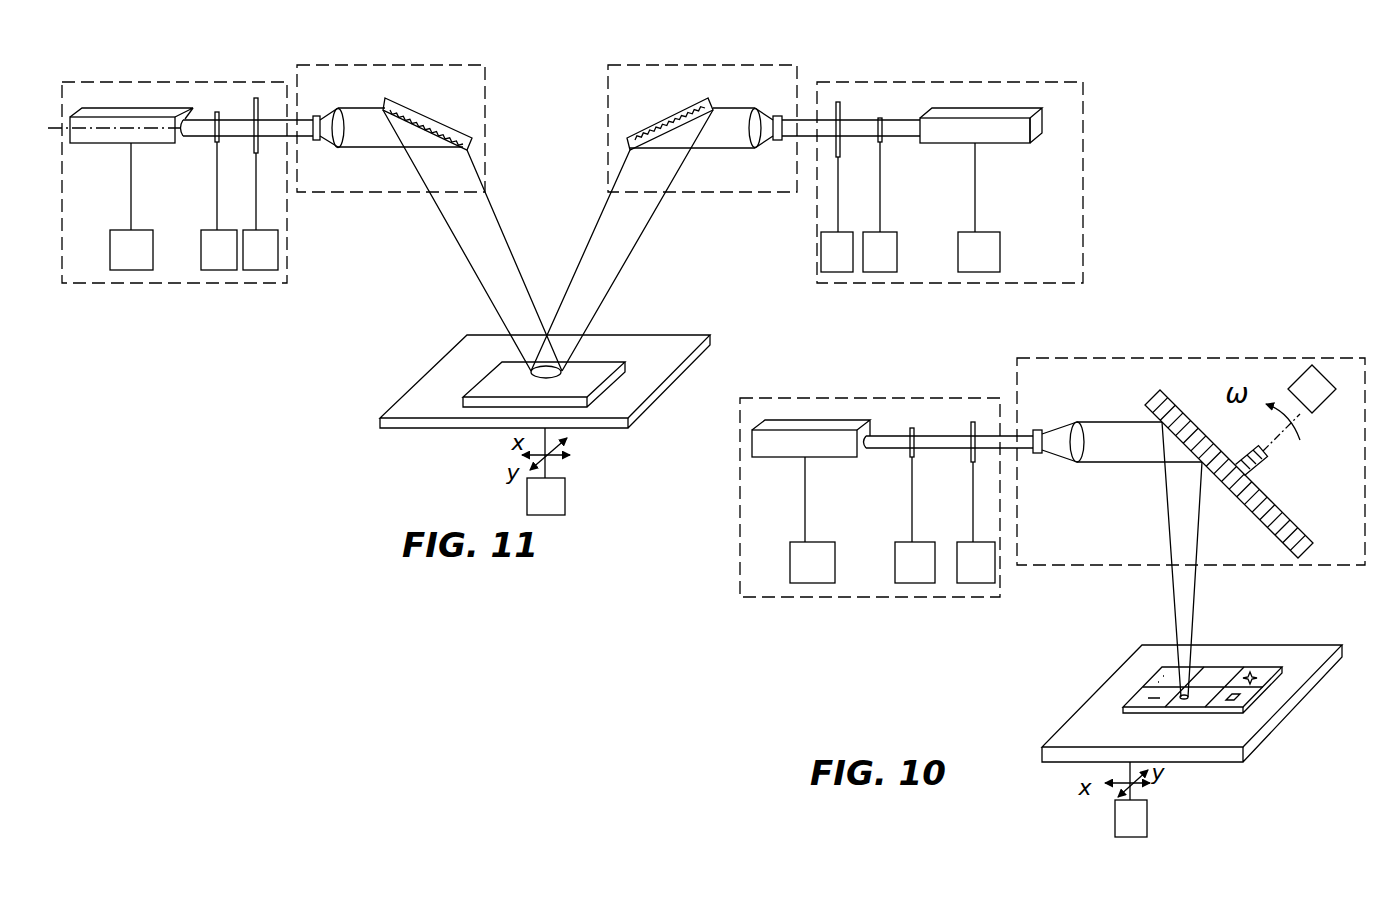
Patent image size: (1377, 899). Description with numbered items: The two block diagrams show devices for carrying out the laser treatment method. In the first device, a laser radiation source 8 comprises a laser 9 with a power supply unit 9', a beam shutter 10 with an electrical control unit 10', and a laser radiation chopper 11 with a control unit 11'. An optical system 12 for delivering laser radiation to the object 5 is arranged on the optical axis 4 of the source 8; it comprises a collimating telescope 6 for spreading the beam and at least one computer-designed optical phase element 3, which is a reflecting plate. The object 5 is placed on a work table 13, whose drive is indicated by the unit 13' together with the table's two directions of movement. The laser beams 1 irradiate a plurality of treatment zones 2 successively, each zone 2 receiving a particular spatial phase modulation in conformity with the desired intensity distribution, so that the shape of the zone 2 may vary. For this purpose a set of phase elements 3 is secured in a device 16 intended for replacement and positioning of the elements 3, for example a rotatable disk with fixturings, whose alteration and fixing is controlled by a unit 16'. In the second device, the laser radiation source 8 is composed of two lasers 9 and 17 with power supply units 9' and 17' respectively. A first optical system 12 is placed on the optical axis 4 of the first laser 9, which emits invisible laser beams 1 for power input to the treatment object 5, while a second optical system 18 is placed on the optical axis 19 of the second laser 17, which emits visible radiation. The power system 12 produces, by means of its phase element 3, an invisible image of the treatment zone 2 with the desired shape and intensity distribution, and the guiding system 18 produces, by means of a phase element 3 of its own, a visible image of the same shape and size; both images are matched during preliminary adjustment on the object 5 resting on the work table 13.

In FIG. 11, the laser beams 1 is at (200, 122).
In FIG. 10, the laser beams 1 is at (892, 440).
In FIG. 11, the treatment zone 2 is at (532, 375).
In FIG. 10, the treatment zone 2 is at (1210, 676).
In FIG. 11, the computer-designed optical phase element 3 is at (415, 110).
In FIG. 10, the computer-designed optical phase element 3 is at (1262, 520).
In FIG. 11, the optical axis 4 is at (62, 130).
In FIG. 11, the object 5 is at (610, 366).
In FIG. 10, the object 5 is at (1125, 710).
In FIG. 11, the collimating telescope 6 is at (320, 110).
In FIG. 10, the collimating telescope 6 is at (1048, 430).
In FIG. 11, the laser radiation source 8 is at (198, 80).
In FIG. 10, the laser radiation source 8 is at (935, 396).
In FIG. 11, the laser 9 is at (131, 126).
In FIG. 10, the laser 9 is at (811, 440).
In FIG. 11, the power supply unit 9' is at (131, 206).
In FIG. 10, the power supply unit 9' is at (812, 520).
In FIG. 11, the beam shutter 10 is at (543, 153).
In FIG. 10, the beam shutter 10 is at (892, 462).
In FIG. 11, the electrical control unit 10' is at (549, 207).
In FIG. 10, the electrical control unit 10' is at (915, 520).
In FIG. 11, the laser radiation chopper 11 is at (545, 145).
In FIG. 10, the laser radiation chopper 11 is at (951, 458).
In FIG. 11, the control unit 11' is at (549, 212).
In FIG. 10, the control unit 11' is at (976, 522).
In FIG. 11, the optical system 12 is at (375, 63).
In FIG. 10, the optical system 12 is at (1230, 355).
In FIG. 11, the work table 13 is at (545, 389).
In FIG. 10, the work table 13 is at (1192, 703).
In FIG. 11, the table drive control 13' is at (546, 471).
In FIG. 10, the table drive control 13' is at (1127, 799).
In FIG. 10, the device for replacement and positioning of phase elements 16 is at (1278, 463).
In FIG. 10, the unit controlling device 16 16' is at (1312, 389).
In FIG. 11, the second laser 17 is at (981, 127).
In FIG. 11, the power supply unit 17' is at (979, 207).
In FIG. 11, the second optical system 18 is at (723, 63).
In FIG. 11, the optical axis 19 is at (1036, 132).